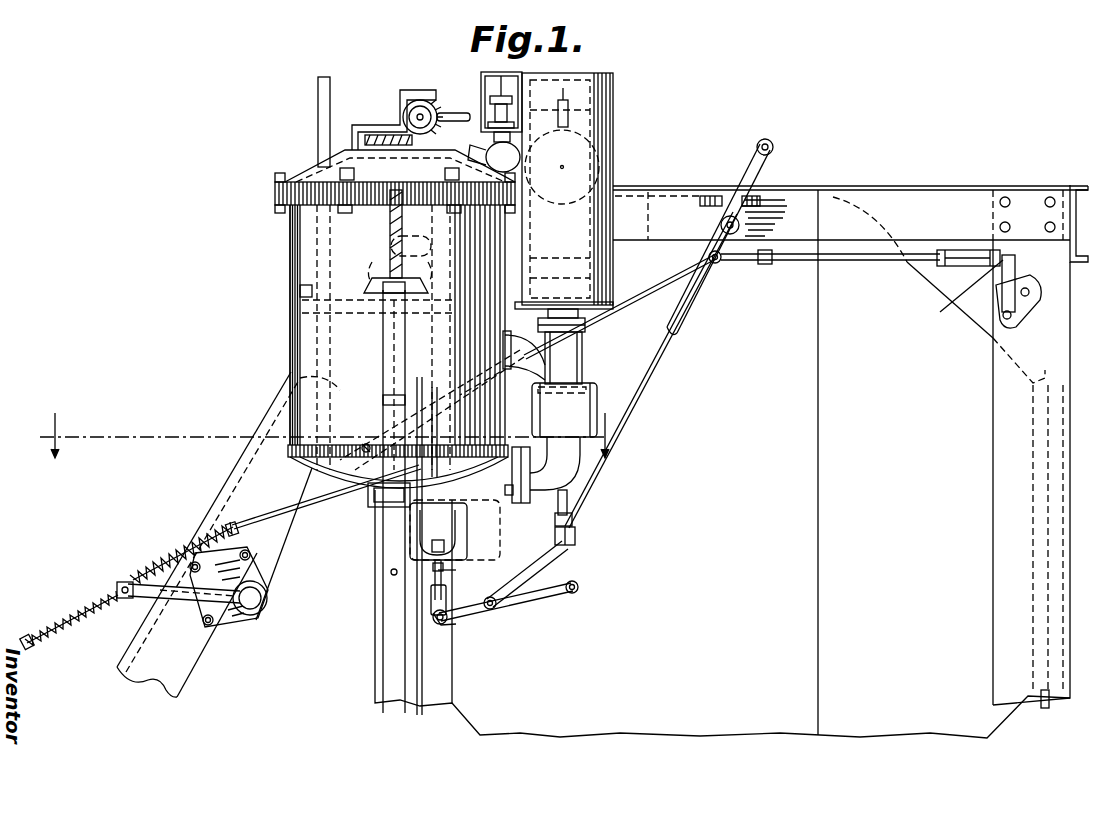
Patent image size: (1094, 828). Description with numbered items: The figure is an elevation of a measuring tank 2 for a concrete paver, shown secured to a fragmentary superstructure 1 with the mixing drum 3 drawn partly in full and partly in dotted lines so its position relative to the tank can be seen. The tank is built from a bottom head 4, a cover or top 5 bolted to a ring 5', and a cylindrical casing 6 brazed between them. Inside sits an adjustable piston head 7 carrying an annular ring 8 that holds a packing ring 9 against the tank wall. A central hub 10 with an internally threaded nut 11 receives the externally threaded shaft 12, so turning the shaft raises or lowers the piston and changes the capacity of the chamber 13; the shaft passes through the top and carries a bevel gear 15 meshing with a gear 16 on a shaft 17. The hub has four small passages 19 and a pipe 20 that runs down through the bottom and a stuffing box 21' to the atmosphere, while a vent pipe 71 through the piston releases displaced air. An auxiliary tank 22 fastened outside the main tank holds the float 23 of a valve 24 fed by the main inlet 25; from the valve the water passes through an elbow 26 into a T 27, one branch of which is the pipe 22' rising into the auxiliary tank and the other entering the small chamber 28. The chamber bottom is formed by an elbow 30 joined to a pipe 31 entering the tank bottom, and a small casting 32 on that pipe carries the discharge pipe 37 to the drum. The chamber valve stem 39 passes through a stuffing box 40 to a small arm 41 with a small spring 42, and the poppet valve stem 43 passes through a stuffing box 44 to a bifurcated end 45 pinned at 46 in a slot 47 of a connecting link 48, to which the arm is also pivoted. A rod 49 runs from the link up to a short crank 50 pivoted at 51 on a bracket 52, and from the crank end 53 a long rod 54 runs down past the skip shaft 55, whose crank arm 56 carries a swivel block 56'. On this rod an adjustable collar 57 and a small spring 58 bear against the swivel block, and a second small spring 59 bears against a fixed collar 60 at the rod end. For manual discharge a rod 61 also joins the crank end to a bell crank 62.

The superstructure 1 is at (948, 198).
The measuring tank 2 is at (288, 242).
The mixing drum 3 is at (722, 464).
The bottom head 4 is at (340, 472).
The cover or top 5 is at (396, 174).
The ring 5' is at (370, 193).
The cylindrical casing 6 is at (289, 342).
The adjustable piston head 7 is at (357, 300).
The annular ring 8 is at (300, 291).
The packing ring 9 is at (300, 310).
The central hub 10 is at (372, 283).
The internally threaded nut 11 is at (398, 282).
The externally threaded shaft 12 is at (390, 230).
The chamber 13 is at (300, 378).
The bevel gear 15 is at (385, 134).
The gear 16 is at (430, 108).
The shaft 17 is at (448, 121).
The small passages 19 is at (407, 259).
The pipe 20 is at (380, 412).
The stuffing box 21' is at (370, 511).
The auxiliary tank 22 is at (585, 191).
The pipe 22' is at (594, 327).
The float 23 is at (600, 163).
The valve 24 is at (505, 150).
The main inlet 25 is at (440, 248).
The elbow 26 is at (528, 355).
The T 27 is at (577, 364).
The small chamber 28 is at (578, 405).
The elbow 30 is at (565, 460).
The pipe 31 is at (509, 490).
The small casting 32 is at (466, 530).
The pipe 37 is at (380, 538).
The valve stem 39 is at (568, 505).
The stuffing box 40 is at (556, 519).
The small arm 41 is at (527, 575).
The small spring 42 is at (576, 523).
The valve stem 43 is at (456, 570).
The stuffing box 44 is at (434, 572).
The bifurcated end 45 is at (432, 600).
The pin 46 is at (444, 624).
The slot 47 is at (452, 620).
The connecting link 48 is at (548, 594).
The rod 49 is at (672, 345).
The short crank 50 is at (760, 175).
The pivot 51 is at (752, 225).
The bracket 52 is at (710, 206).
The end of crank arm 53 is at (735, 262).
The long rod 54 is at (300, 510).
The skip shaft 55 is at (255, 600).
The crank arm 56 is at (184, 614).
The swivel block 56' is at (114, 570).
The adjustable collar 57 is at (362, 447).
The small spring 58 is at (165, 568).
The small spring 59 is at (82, 615).
The fixed collar 60 is at (32, 650).
The rod 61 is at (886, 262).
The bell crank 62 is at (979, 296).
The vent pipe 71 is at (318, 113).